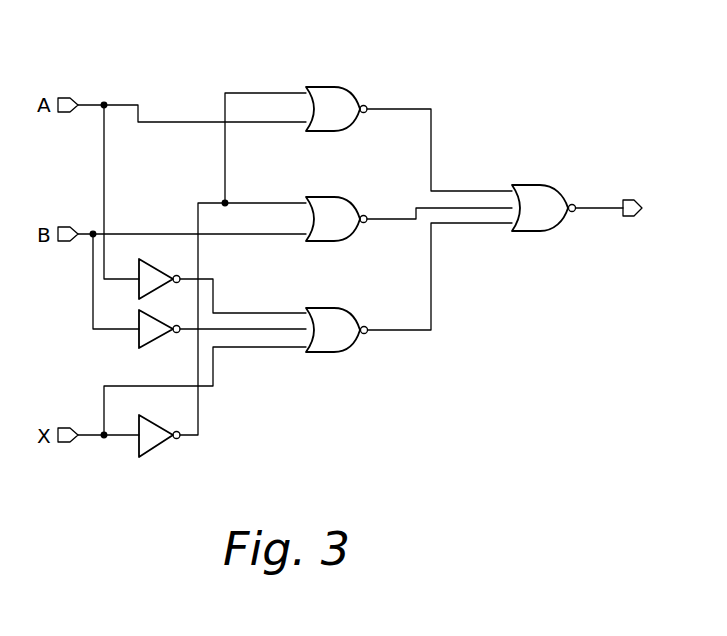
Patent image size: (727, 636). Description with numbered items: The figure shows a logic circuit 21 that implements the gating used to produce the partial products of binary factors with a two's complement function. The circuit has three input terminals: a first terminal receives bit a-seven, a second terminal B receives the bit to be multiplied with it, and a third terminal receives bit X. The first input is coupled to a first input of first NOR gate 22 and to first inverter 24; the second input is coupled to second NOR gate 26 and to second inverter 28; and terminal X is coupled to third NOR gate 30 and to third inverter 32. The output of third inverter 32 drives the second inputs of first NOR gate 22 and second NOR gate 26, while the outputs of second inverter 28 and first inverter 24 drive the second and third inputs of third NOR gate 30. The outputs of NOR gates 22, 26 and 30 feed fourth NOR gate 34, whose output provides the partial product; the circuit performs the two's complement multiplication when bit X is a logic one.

The logic circuit 21 is at (457, 72).
The first NOR gate 22 is at (336, 87).
The first inverter 24 is at (151, 258).
The second NOR gate 26 is at (336, 197).
The second inverter 28 is at (140, 347).
The third NOR gate 30 is at (336, 308).
The third inverter 32 is at (162, 443).
The fourth NOR gate 34 is at (545, 185).